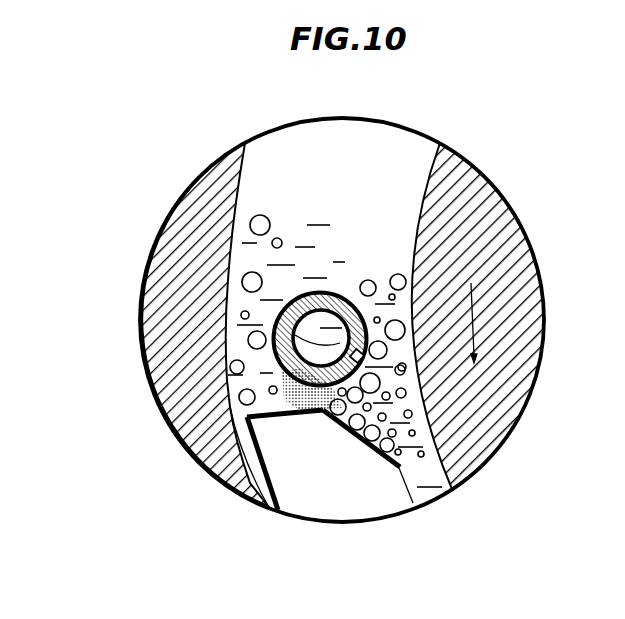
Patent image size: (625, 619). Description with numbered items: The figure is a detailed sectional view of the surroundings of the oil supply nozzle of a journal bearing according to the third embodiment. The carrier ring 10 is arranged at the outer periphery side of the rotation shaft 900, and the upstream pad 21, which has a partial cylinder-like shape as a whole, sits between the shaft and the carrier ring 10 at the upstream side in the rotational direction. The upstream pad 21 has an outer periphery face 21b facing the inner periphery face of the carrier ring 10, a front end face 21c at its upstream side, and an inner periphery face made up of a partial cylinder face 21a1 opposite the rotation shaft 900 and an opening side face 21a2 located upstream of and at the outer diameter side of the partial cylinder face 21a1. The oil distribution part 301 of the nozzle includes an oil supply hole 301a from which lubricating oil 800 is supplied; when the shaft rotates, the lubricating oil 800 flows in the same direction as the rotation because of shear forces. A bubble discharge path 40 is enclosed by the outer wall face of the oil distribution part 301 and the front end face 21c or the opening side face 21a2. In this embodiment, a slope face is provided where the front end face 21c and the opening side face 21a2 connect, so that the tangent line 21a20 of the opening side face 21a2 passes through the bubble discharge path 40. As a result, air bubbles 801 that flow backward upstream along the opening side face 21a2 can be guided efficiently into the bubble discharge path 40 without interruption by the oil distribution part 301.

The carrier ring 10 is at (213, 250).
The lubricating oil 800 is at (303, 210).
The air bubbles 801 is at (213, 188).
The rotation shaft 900 is at (490, 172).
The oil distribution part 301 is at (274, 336).
The oil supply hole 301a is at (275, 312).
The tangent line of the opening side face 21a20 is at (232, 386).
The bubble discharge path 40 is at (262, 445).
The upstream pad 21 is at (284, 504).
The partial cylinder face 21a1 is at (412, 497).
The opening side face 21a2 is at (340, 420).
The outer periphery face 21b is at (268, 505).
The front end face 21c is at (217, 457).